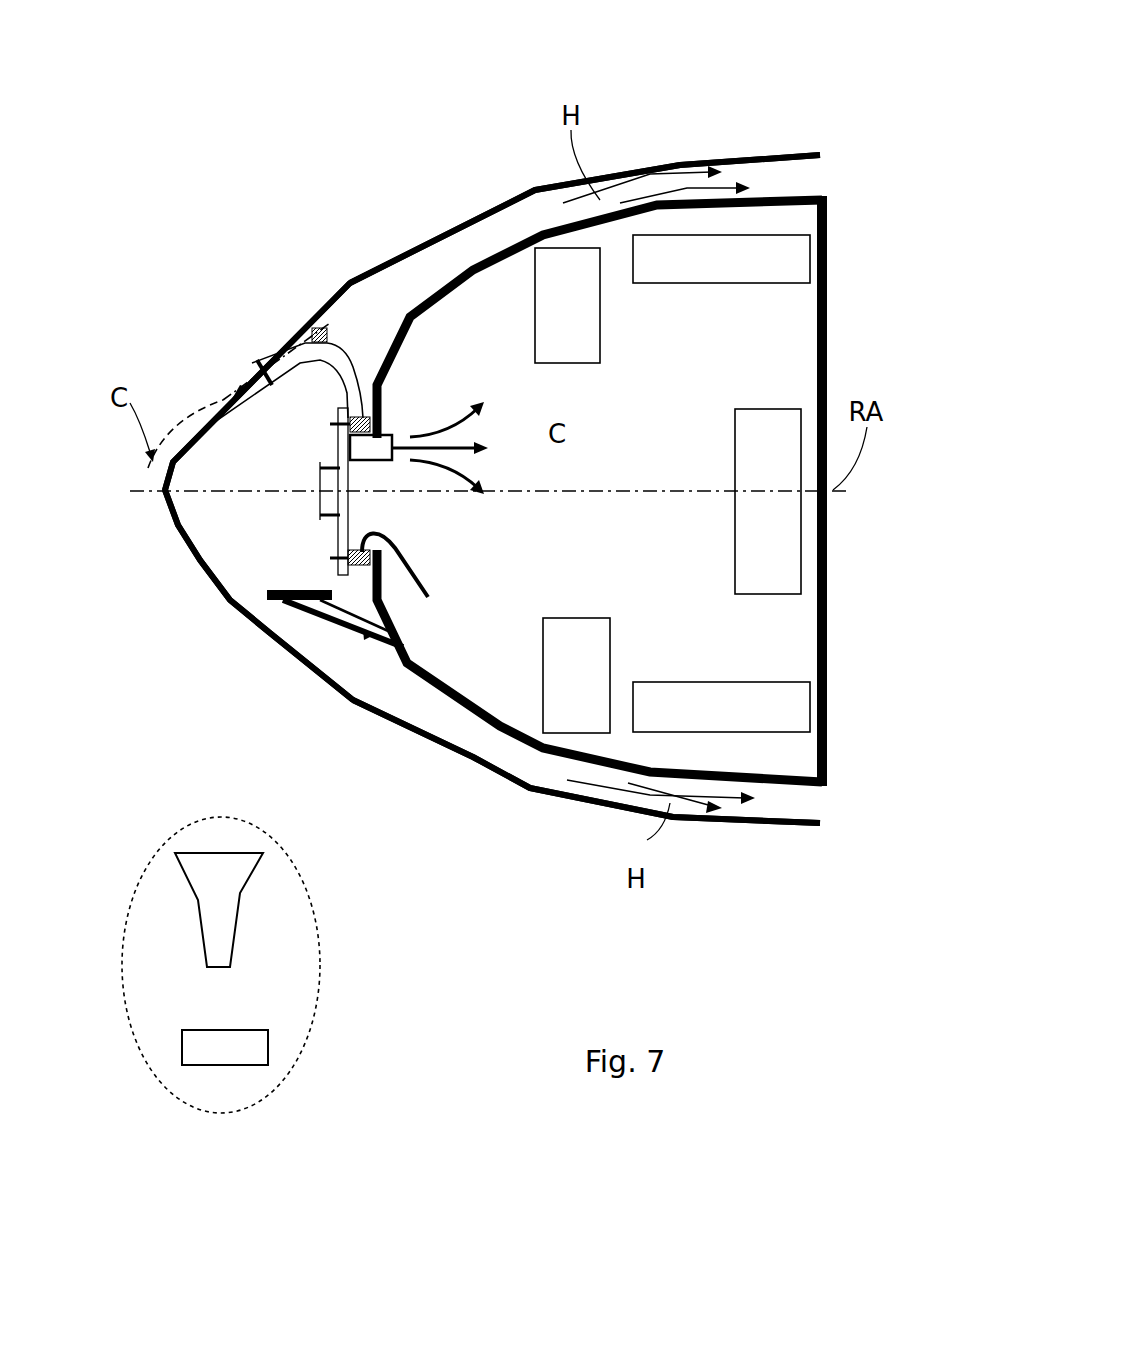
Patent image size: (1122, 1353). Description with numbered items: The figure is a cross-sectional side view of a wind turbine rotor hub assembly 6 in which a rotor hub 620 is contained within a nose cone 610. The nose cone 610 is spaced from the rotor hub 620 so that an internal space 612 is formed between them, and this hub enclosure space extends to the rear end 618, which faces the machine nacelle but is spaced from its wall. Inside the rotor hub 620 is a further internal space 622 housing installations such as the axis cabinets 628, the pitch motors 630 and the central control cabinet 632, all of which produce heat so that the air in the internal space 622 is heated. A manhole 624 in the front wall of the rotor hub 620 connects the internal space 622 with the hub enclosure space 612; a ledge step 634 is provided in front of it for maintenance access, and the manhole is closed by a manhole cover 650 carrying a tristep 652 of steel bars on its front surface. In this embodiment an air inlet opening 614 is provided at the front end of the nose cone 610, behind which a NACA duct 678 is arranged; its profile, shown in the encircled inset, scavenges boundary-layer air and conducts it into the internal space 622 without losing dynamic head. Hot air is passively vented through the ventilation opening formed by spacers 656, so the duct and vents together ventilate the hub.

The nacelle assembly 6 is at (455, 100).
The nose cone 610 is at (713, 160).
The internal space 612 is at (588, 491).
The air inlet opening 614 is at (195, 372).
The rear end 618 is at (826, 180).
The rotor hub 620 is at (825, 300).
The internal space 622 is at (683, 383).
The manhole 624 is at (381, 500).
The axis cabinets 628 is at (721, 483).
The pitch motors 630 is at (572, 490).
The central control cabinet 632 is at (768, 501).
The ledge step 634 is at (273, 602).
The manhole cover 650 is at (338, 545).
The tristep 652 is at (320, 470).
The spacers 656 is at (352, 568).
The NACA duct 678 is at (250, 370).